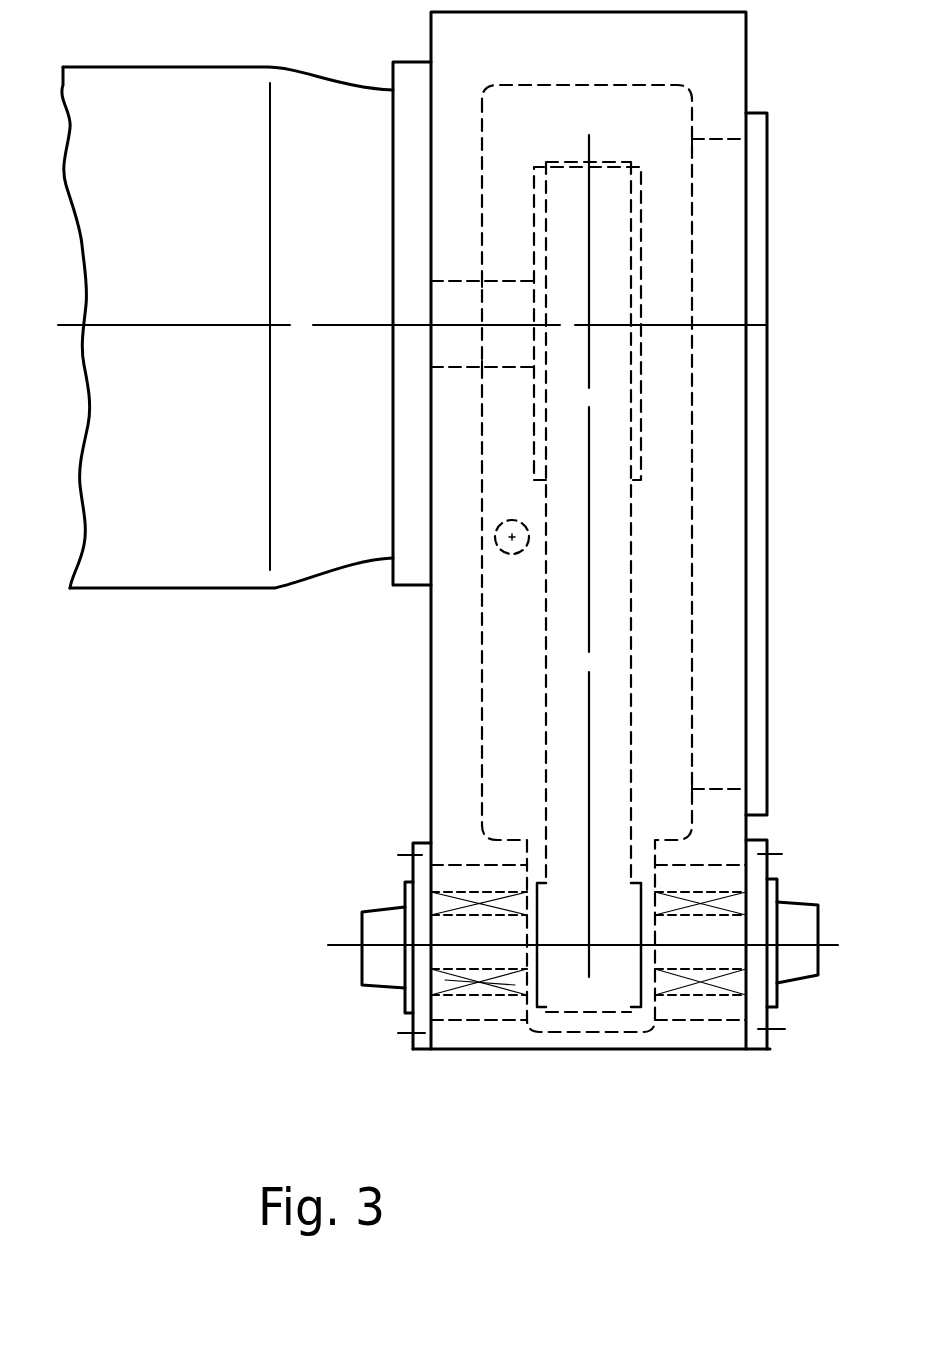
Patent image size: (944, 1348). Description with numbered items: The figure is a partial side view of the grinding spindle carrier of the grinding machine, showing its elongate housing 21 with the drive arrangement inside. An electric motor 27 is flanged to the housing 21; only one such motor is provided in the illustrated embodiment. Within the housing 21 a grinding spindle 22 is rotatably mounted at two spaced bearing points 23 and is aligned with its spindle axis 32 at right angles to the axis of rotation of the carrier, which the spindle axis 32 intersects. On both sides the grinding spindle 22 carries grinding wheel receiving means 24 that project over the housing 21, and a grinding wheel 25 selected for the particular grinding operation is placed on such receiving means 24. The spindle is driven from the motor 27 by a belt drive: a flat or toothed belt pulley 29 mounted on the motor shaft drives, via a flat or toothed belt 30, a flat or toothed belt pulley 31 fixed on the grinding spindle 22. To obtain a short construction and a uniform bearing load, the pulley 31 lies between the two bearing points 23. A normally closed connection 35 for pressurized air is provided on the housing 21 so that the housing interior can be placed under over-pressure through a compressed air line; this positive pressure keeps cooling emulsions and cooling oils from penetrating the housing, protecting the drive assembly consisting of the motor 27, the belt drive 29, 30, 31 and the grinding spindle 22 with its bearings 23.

The housing 21 is at (452, 653).
The grinding spindle 22 is at (476, 970).
The bearing points 23 is at (450, 1000).
The grinding wheel receiving means 24 is at (787, 915).
The grinding wheel 25 is at (512, 367).
The electric motor 27 is at (202, 558).
The flat or toothed belt pulley 29 is at (640, 220).
The flat or toothed belt 30 is at (612, 550).
The flat or toothed belt pulley 31 is at (540, 1002).
The spindle axis 32 is at (345, 950).
The connection for pressurized air 35 is at (512, 555).